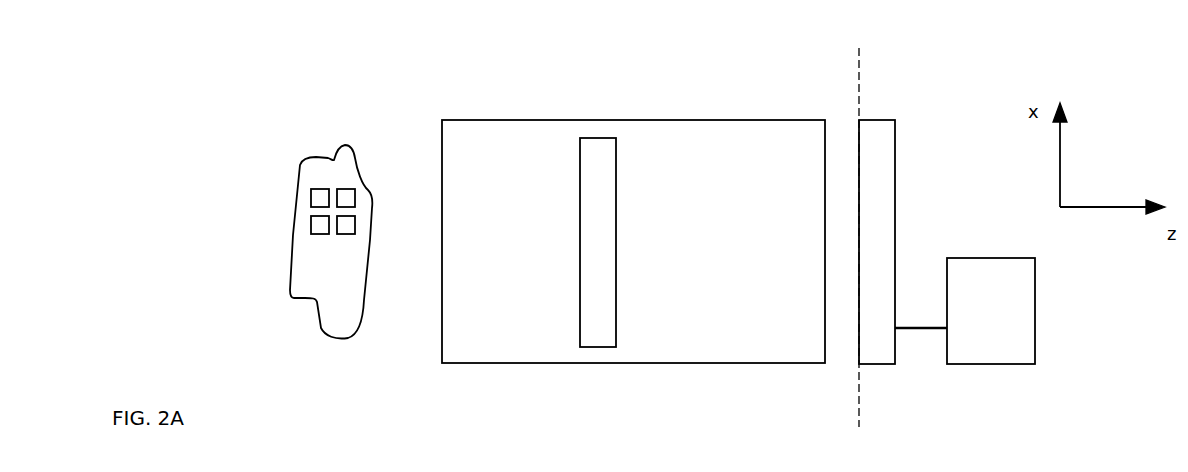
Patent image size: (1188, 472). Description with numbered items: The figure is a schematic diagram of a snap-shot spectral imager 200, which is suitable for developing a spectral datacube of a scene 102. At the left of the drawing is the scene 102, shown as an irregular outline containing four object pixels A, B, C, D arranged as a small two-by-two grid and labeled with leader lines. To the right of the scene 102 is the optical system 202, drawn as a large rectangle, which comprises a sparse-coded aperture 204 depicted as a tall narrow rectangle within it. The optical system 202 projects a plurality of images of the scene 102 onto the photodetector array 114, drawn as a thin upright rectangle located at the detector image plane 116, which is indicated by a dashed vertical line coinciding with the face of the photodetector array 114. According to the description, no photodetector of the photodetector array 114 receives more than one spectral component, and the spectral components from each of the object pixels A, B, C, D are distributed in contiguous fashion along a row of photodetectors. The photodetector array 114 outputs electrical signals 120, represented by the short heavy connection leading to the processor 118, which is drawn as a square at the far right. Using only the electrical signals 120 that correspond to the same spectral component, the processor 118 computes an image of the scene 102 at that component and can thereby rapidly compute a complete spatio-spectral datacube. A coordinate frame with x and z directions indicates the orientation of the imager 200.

The imager 200 is at (346, 70).
The scene 102 is at (321, 330).
The object pixel A is at (347, 197).
The object pixel B is at (318, 197).
The object pixel C is at (347, 226).
The object pixel D is at (318, 226).
The optical system 202 is at (648, 363).
The sparse-coded aperture 204 is at (579, 260).
The detector image plane 116 is at (858, 87).
The photodetector array 114 is at (885, 364).
The electrical signals 120 is at (910, 327).
The processor 118 is at (1007, 364).